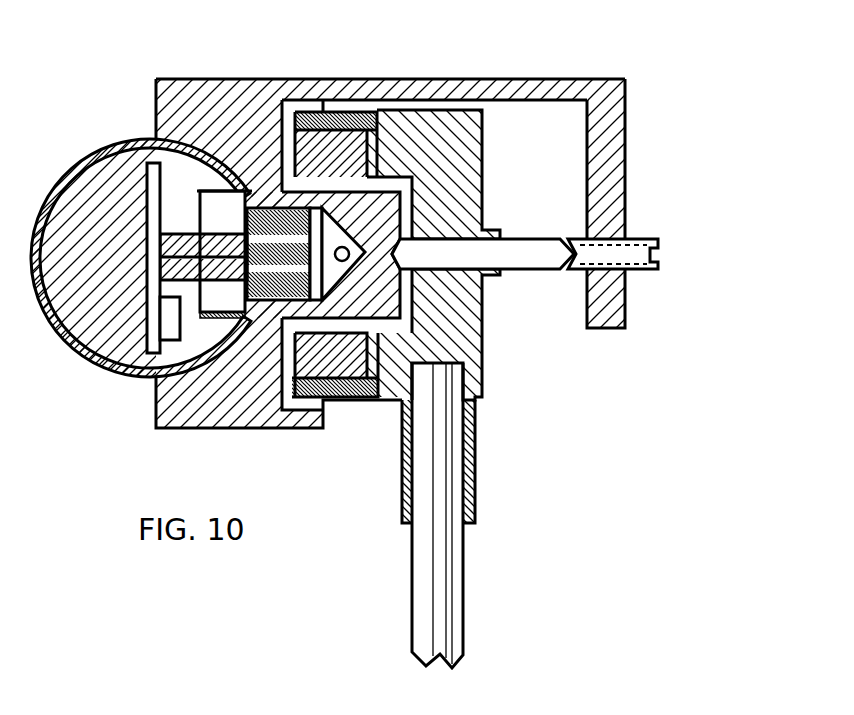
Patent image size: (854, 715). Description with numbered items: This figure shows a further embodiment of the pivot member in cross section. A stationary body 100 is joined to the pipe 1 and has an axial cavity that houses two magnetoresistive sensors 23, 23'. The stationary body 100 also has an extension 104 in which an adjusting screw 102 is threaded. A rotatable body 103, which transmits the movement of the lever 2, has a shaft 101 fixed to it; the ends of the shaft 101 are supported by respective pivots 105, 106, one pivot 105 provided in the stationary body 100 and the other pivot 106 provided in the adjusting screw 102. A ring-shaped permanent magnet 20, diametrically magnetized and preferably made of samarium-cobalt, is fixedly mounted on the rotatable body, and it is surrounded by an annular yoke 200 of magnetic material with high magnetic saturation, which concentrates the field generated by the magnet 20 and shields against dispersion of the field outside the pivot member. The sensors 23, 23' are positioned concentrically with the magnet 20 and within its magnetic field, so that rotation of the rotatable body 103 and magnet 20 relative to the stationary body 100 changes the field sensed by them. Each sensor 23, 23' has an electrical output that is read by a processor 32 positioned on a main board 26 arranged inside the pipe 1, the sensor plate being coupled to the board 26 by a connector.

The pipe 1 is at (80, 347).
The lever 2 is at (425, 543).
The permanent magnet 20 is at (335, 140).
The magnetoresistive sensor 23 is at (434, 323).
The magnetoresistive sensor 23' is at (468, 342).
The main board 26 is at (147, 213).
The processor 32 is at (180, 332).
The stationary body 100 is at (212, 103).
The shaft 101 is at (512, 253).
The adjusting screw 102 is at (650, 242).
The rotatable body 103 is at (448, 157).
The extension 104 is at (610, 185).
The pivot 105 is at (345, 318).
The pivot 106 is at (573, 238).
The annular yoke 200 is at (348, 363).